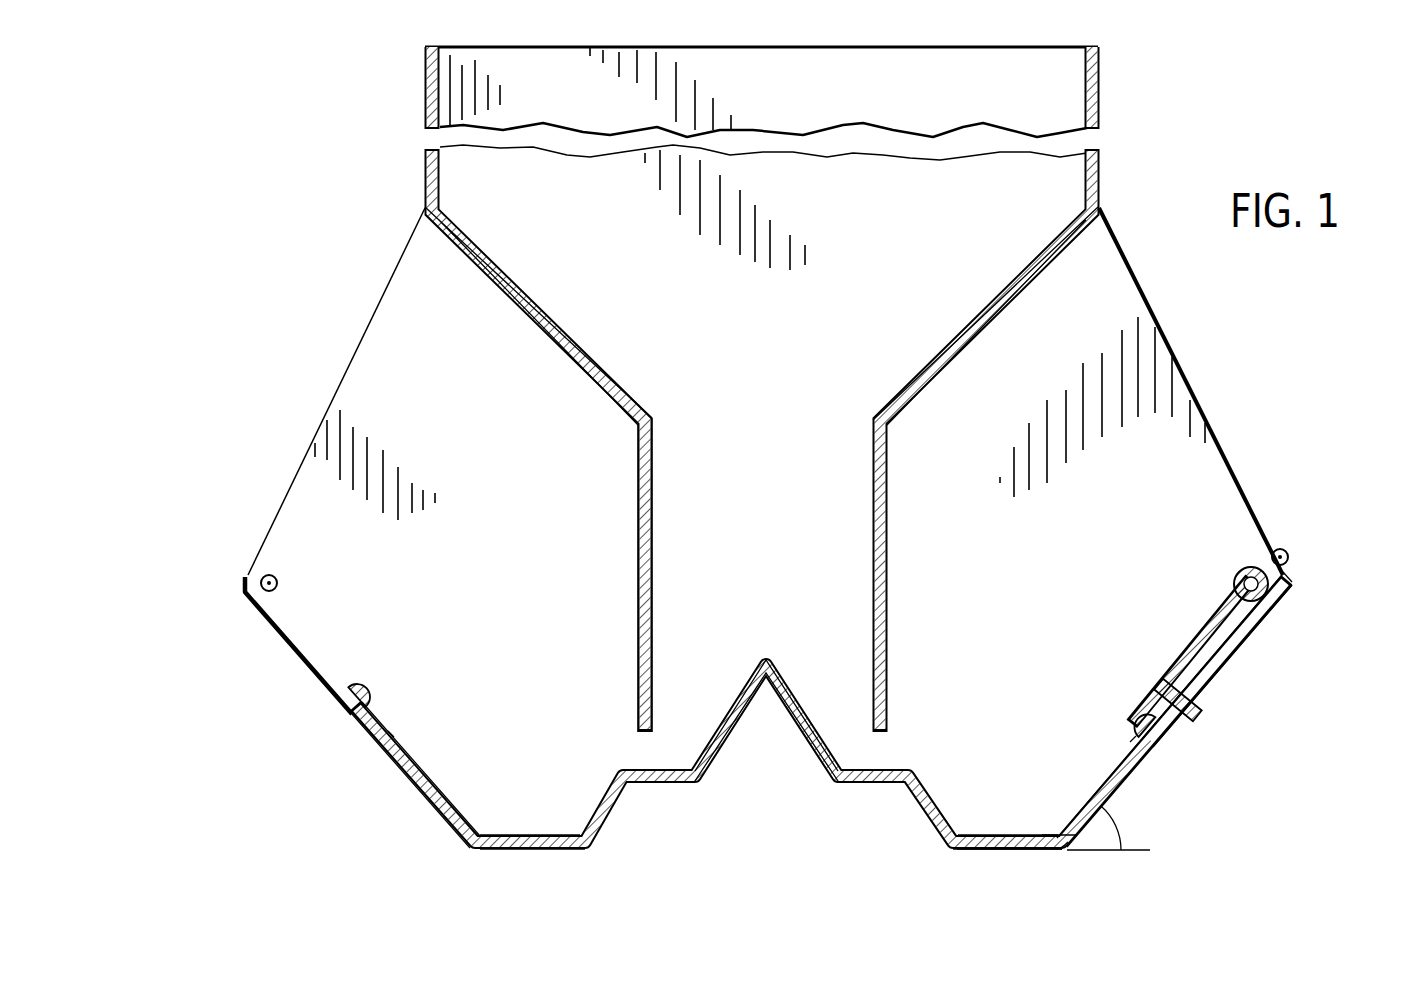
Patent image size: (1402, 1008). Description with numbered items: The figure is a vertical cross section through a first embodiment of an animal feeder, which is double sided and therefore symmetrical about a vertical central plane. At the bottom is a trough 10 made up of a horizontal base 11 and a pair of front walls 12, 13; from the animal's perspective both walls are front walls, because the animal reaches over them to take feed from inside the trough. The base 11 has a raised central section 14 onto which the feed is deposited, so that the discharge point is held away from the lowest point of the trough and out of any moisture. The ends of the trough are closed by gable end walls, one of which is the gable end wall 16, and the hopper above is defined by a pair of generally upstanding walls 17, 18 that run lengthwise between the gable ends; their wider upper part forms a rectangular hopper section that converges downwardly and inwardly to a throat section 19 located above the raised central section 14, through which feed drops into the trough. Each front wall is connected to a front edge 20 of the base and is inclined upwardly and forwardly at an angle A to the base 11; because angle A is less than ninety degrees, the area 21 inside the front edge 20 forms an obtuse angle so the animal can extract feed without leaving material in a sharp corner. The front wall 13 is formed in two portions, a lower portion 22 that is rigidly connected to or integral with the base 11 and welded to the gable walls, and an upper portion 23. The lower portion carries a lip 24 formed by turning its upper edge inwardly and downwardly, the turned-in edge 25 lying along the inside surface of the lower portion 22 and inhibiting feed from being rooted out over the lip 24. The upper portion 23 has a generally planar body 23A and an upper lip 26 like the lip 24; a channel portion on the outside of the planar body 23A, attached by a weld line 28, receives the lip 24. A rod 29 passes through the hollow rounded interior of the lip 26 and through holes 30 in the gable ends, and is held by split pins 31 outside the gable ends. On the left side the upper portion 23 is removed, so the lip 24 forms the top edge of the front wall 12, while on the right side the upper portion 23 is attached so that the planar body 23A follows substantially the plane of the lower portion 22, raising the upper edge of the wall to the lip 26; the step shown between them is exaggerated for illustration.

The trough 10 is at (585, 855).
The horizontal base 11 is at (550, 822).
The front wall 12 is at (405, 790).
The front wall 13 is at (1122, 797).
The raised central section 14 is at (700, 776).
The gable end wall 16 is at (487, 564).
The upstanding wall 17 is at (533, 291).
The upstanding wall 18 is at (985, 297).
The throat section 19 is at (657, 525).
The front edge 20 is at (1056, 851).
The area inside front edge 21 is at (1050, 820).
The lower portion 22 is at (1138, 777).
The upper portion 23 is at (1228, 640).
The planar body 23A is at (1193, 643).
The lip 24 is at (355, 707).
The edge 25 is at (395, 738).
The upper lip 26 is at (1243, 565).
The weld line 28 is at (1185, 688).
The rod 29 is at (1290, 580).
The hole 30 is at (262, 578).
The split pin 31 is at (1290, 550).
The angle A is at (1122, 840).